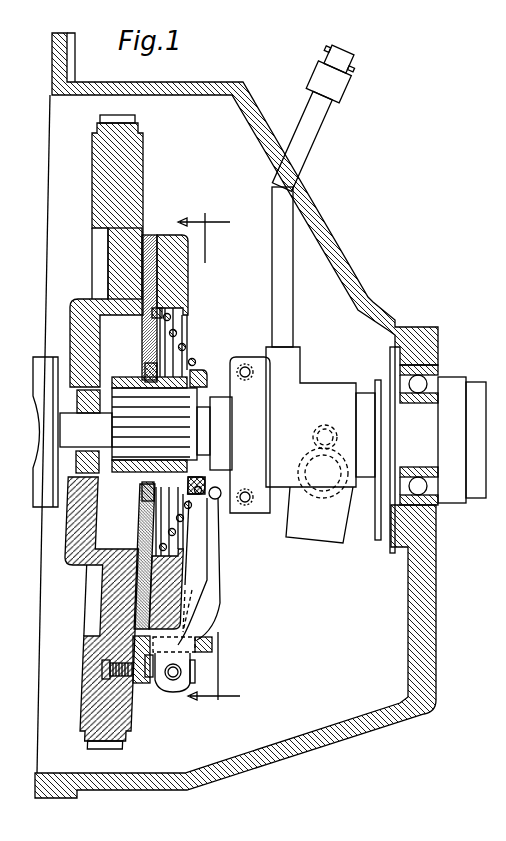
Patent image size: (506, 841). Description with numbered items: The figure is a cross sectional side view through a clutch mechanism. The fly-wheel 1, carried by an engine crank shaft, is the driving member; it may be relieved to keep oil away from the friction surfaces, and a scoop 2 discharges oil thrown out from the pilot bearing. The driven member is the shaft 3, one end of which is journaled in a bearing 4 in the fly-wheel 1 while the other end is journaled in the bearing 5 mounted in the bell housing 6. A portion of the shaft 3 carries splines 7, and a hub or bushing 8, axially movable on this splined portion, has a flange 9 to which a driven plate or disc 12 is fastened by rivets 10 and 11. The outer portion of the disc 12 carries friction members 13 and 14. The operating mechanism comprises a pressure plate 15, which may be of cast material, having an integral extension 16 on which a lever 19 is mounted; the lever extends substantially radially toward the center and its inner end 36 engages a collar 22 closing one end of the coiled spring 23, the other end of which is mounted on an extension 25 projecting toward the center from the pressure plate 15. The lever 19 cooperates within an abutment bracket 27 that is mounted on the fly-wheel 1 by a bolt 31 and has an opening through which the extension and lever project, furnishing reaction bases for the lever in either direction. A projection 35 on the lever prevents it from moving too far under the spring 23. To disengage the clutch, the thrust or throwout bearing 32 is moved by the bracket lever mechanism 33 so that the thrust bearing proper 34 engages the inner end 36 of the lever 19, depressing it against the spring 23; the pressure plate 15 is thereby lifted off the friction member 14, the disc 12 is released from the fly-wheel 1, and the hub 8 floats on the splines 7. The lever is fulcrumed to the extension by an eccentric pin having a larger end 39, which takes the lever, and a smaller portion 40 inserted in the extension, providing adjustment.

The fly-wheel 1 is at (100, 170).
The scoop 2 is at (68, 600).
The shaft 3 is at (202, 422).
The bearing 4 is at (82, 398).
The bearing 5 is at (440, 373).
The bell housing 6 is at (362, 282).
The splines 7 is at (60, 435).
The hub or bushing 8 is at (110, 465).
The flange 9 is at (150, 358).
The rivet 10 is at (145, 482).
The rivet 11 is at (147, 378).
The driven plate or disc 12 is at (100, 218).
The friction member 13 is at (140, 240).
The friction member 14 is at (143, 250).
The pressure plate 15 is at (162, 268).
The extension 16 is at (192, 585).
The lever 19 is at (202, 595).
The collar 22 is at (197, 373).
The coiled spring 23 is at (163, 547).
The extension 25 is at (162, 320).
The abutment bracket 27 is at (212, 638).
The bolt 31 is at (100, 670).
The thrust or throwout bearing 32 is at (288, 373).
The bracket lever mechanism 33 is at (318, 537).
The thrust bearing proper 34 is at (245, 357).
The projection 35 is at (180, 627).
The inner end of lever 36 is at (219, 505).
The larger end of pin 39 is at (192, 663).
The smaller portion of pin 40 is at (195, 675).